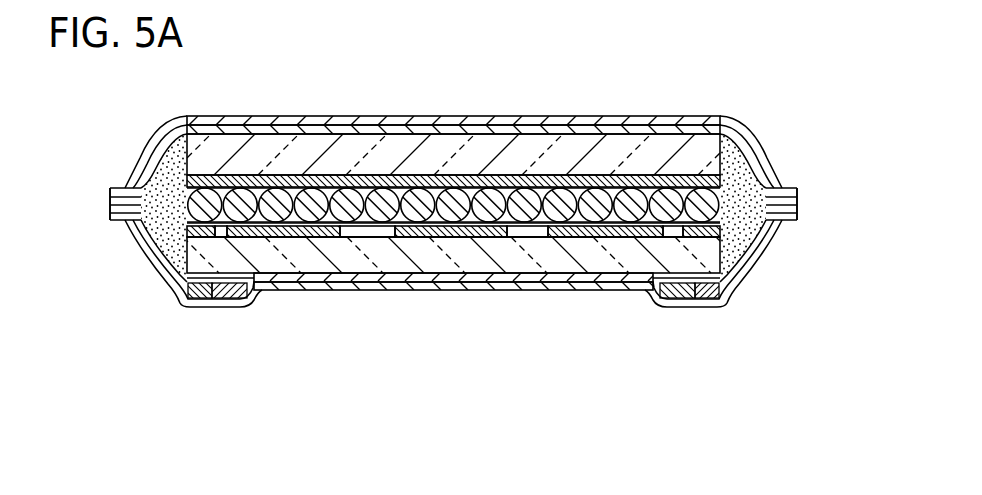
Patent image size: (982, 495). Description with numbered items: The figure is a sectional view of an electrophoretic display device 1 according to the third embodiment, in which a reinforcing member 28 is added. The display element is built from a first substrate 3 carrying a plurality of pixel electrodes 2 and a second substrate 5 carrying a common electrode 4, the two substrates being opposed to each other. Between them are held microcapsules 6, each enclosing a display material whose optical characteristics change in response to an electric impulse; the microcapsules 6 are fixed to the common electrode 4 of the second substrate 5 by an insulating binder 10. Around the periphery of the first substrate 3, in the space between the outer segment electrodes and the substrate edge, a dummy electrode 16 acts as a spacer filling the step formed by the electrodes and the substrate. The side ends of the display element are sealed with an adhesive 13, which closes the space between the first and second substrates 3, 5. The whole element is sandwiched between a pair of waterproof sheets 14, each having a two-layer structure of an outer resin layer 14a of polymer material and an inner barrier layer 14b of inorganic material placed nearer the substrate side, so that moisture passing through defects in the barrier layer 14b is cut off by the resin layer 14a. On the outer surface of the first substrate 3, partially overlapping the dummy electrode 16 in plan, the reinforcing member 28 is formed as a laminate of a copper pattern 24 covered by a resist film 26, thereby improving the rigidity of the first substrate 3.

The electrophoretic display device 1 is at (519, 82).
The pixel electrodes 2 is at (602, 241).
The first substrate 3 is at (711, 254).
The common electrode 4 is at (727, 178).
The second substrate 5 is at (745, 150).
The microcapsules 6 is at (487, 218).
The binder 10 is at (413, 214).
The adhesive 13 is at (133, 172).
The waterproof sheets 14 is at (453, 199).
The resin layer 14a is at (286, 121).
The barrier layer 14b is at (310, 63).
The dummy electrode 16 is at (147, 248).
The copper pattern 24 is at (220, 307).
The resist film 26 is at (245, 364).
The reinforcing member 28 is at (451, 338).